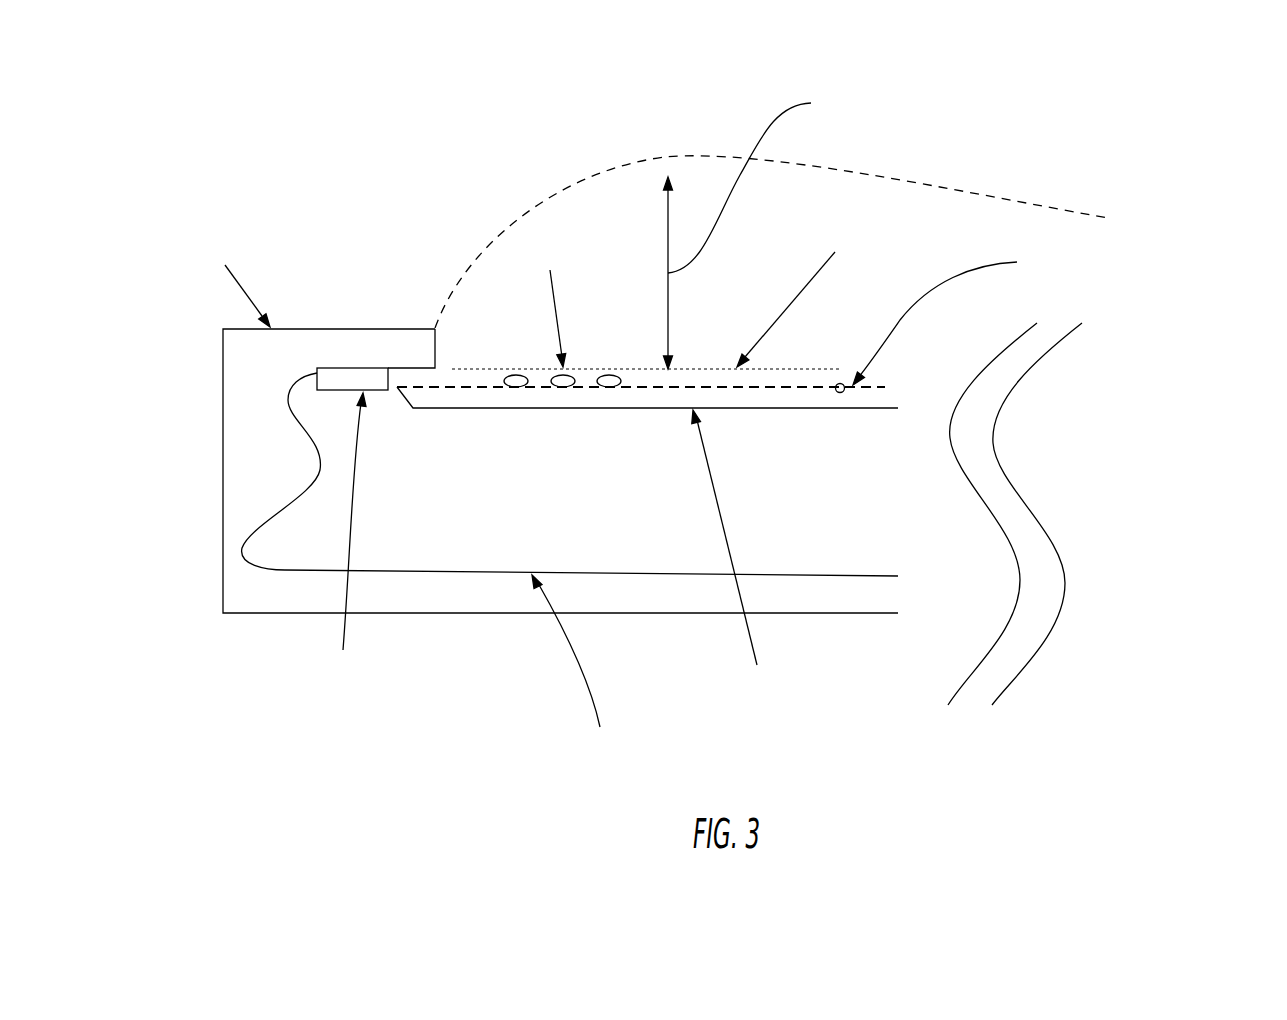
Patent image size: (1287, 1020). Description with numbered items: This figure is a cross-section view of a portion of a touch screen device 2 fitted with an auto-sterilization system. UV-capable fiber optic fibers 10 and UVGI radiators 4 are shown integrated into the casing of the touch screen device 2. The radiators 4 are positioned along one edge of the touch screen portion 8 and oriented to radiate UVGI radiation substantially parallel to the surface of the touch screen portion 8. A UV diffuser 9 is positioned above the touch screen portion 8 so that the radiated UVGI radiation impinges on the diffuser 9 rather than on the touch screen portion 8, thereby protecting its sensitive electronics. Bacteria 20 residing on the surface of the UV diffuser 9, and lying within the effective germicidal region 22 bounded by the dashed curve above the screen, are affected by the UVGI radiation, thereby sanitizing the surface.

The touch screen device 2 is at (238, 432).
The UVGI radiators 4 is at (353, 378).
The touch screen portion 8 is at (764, 401).
The UV diffuser 9 is at (843, 392).
The UV-capable fiber optic fibers 10 is at (485, 560).
The bacteria 20 is at (609, 388).
The effective germicidal region 22 is at (597, 150).